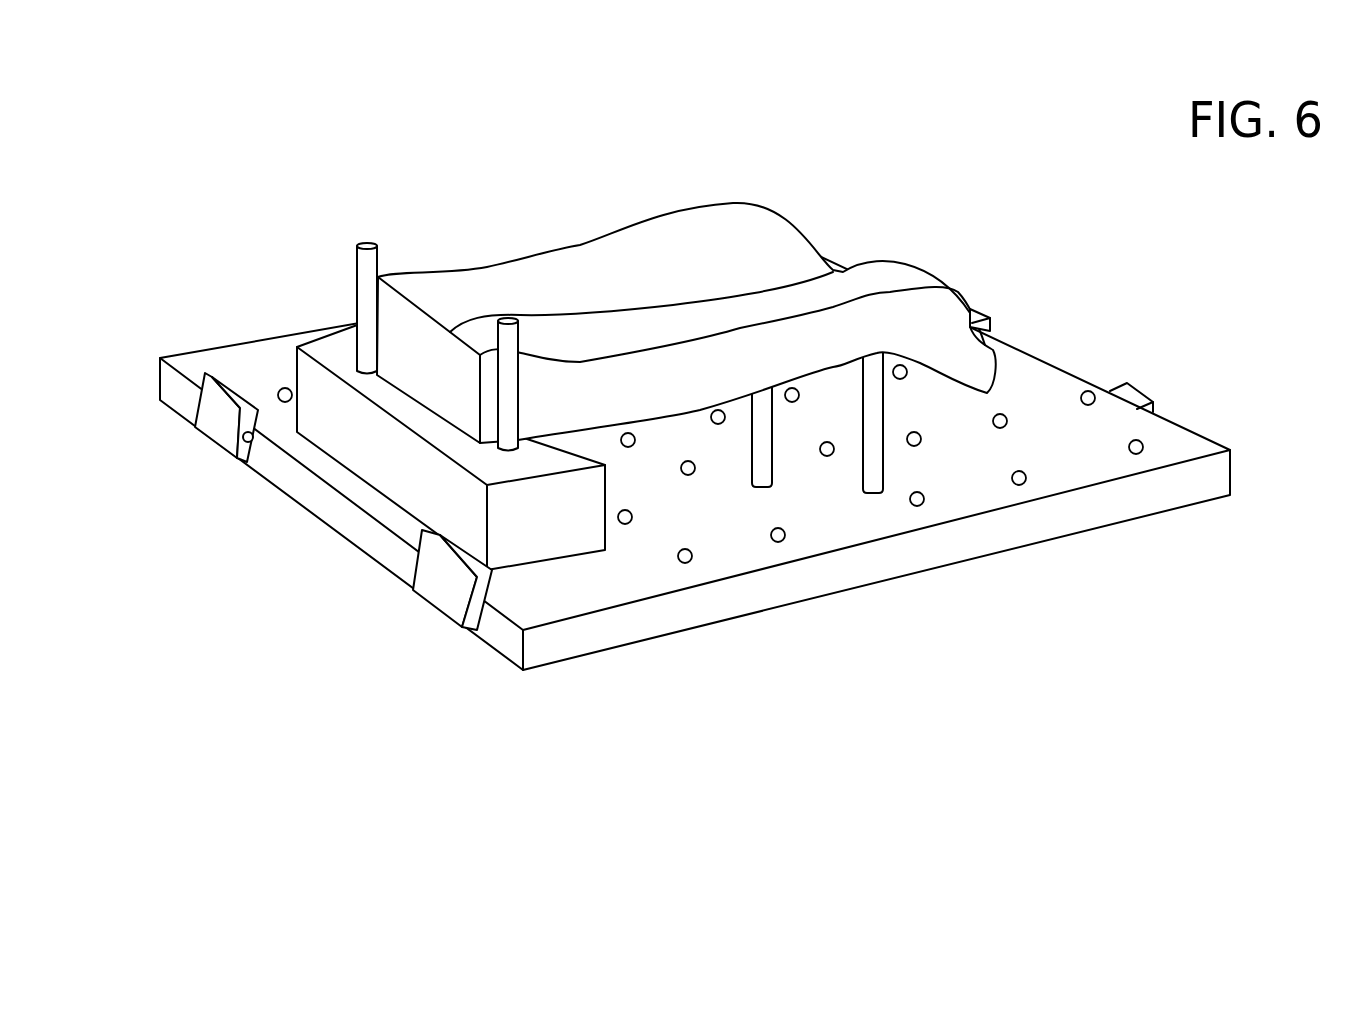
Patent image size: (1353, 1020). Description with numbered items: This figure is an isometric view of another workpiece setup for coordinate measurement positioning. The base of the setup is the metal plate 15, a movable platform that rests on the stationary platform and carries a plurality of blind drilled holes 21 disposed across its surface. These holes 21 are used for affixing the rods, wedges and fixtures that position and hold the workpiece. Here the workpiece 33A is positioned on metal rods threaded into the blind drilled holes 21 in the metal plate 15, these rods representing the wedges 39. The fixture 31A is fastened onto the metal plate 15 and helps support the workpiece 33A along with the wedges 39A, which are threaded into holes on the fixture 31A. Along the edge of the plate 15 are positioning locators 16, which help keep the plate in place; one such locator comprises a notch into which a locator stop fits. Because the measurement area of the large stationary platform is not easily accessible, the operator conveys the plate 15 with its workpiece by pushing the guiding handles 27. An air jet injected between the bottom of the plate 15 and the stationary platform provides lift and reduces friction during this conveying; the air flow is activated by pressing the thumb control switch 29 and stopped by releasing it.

The first movable platform 15 is at (825, 582).
The positioning locators 16 is at (995, 318).
The blind drilled holes 21 is at (1019, 482).
The guiding handles 27 is at (220, 402).
The thumb control switch 29 is at (245, 441).
The fixture 31A is at (383, 468).
The workpiece 33A is at (577, 247).
The wedges 39 is at (757, 468).
The wedges 39A is at (367, 275).